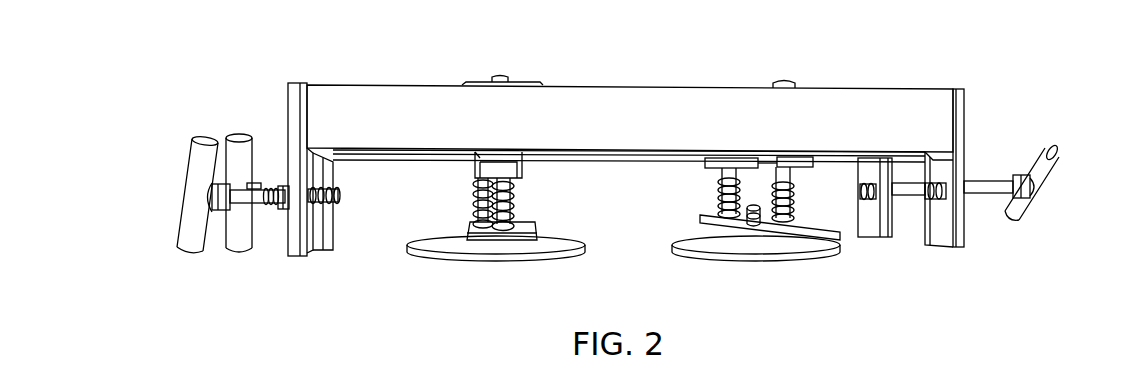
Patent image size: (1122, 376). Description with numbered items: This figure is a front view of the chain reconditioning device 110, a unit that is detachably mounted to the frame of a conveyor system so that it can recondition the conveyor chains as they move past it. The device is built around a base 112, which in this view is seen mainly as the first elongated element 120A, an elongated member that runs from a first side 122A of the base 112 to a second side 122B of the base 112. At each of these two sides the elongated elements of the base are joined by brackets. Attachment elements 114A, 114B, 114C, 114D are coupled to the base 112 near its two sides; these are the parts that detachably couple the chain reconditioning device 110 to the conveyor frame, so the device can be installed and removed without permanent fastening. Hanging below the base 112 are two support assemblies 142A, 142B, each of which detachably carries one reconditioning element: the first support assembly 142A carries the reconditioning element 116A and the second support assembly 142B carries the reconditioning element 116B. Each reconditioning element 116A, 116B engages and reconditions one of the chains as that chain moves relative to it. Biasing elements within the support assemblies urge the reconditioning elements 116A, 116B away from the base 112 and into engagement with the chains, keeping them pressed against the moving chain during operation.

The chain reconditioning device 110 is at (284, 62).
The base 112 is at (635, 86).
The first elongated element 120A is at (853, 88).
The first side 122A is at (201, 118).
The second side 122B is at (1033, 130).
The attachment element 114A is at (205, 252).
The attachment element 114B is at (1046, 170).
The attachment element 114C is at (244, 136).
The attachment element 114D is at (912, 194).
The support assembly 142A is at (413, 217).
The support assembly 142B is at (680, 205).
The reconditioning element 116A is at (456, 259).
The reconditioning element 116B is at (811, 258).